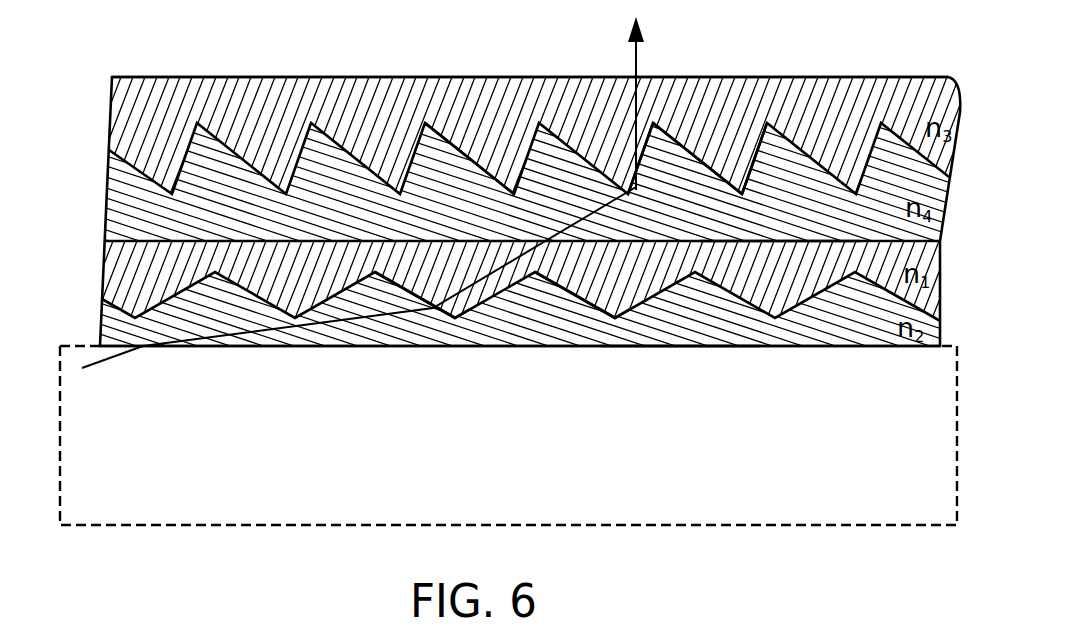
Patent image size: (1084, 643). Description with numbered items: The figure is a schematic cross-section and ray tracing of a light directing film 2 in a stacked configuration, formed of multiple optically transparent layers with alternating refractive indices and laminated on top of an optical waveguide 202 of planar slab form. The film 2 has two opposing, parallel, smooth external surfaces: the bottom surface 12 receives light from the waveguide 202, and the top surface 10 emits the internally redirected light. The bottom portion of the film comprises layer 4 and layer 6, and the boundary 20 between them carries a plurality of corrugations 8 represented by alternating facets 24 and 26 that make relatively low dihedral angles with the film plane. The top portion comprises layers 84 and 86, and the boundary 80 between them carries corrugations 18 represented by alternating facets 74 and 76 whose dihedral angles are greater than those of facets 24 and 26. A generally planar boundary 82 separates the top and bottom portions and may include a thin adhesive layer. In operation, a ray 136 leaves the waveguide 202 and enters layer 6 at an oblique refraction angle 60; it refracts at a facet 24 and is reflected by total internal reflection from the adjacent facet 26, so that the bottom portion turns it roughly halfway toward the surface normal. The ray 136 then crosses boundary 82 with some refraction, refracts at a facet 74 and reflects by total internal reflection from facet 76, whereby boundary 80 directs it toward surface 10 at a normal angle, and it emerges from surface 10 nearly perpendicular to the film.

The light directing film 2 is at (896, 64).
The external surface 10 is at (165, 76).
The layer 84 is at (143, 113).
The corrugations 18 is at (425, 122).
The facet 74 is at (700, 162).
The facet 76 is at (758, 150).
The boundary 80 is at (143, 170).
The layer 86 is at (110, 218).
The boundary 82 is at (775, 240).
The layer 4 is at (105, 268).
The corrugations 8 is at (365, 272).
The facet 24 is at (581, 295).
The facet 26 is at (643, 308).
The boundary 20 is at (105, 297).
The layer 6 is at (108, 328).
The external surface 12 is at (672, 348).
The refraction angle 60 is at (345, 332).
The ray 136 is at (95, 368).
The optical waveguide 202 is at (268, 525).